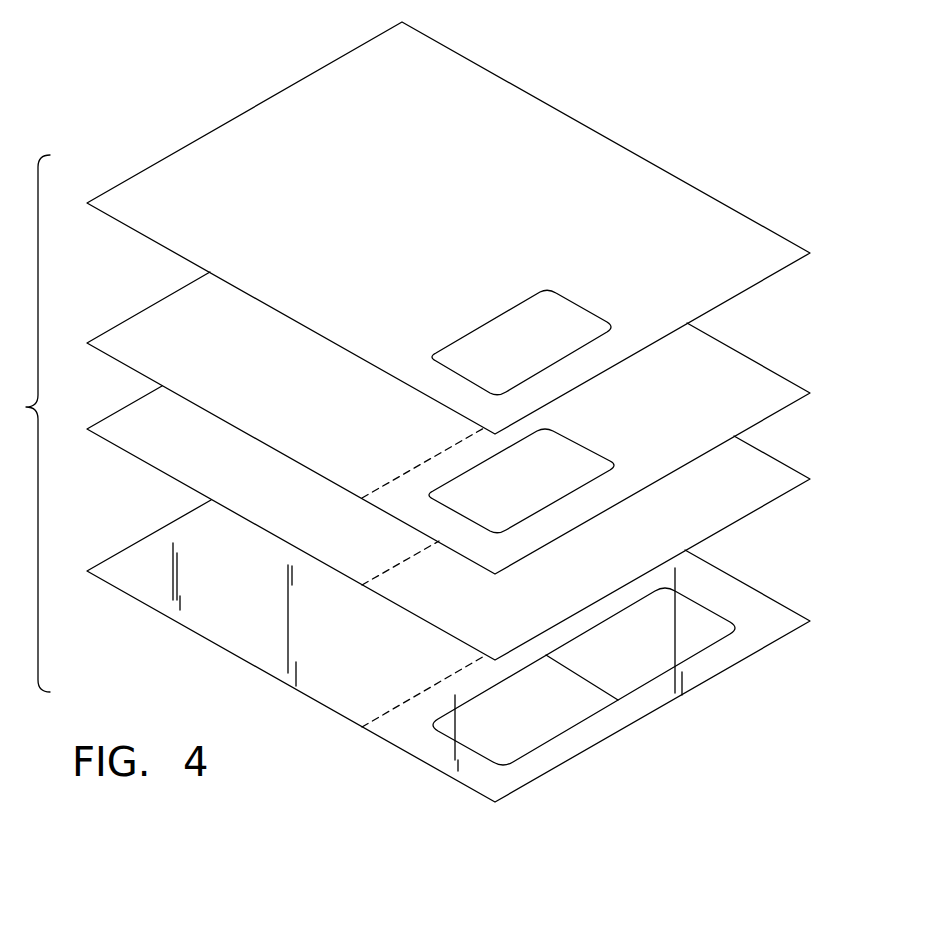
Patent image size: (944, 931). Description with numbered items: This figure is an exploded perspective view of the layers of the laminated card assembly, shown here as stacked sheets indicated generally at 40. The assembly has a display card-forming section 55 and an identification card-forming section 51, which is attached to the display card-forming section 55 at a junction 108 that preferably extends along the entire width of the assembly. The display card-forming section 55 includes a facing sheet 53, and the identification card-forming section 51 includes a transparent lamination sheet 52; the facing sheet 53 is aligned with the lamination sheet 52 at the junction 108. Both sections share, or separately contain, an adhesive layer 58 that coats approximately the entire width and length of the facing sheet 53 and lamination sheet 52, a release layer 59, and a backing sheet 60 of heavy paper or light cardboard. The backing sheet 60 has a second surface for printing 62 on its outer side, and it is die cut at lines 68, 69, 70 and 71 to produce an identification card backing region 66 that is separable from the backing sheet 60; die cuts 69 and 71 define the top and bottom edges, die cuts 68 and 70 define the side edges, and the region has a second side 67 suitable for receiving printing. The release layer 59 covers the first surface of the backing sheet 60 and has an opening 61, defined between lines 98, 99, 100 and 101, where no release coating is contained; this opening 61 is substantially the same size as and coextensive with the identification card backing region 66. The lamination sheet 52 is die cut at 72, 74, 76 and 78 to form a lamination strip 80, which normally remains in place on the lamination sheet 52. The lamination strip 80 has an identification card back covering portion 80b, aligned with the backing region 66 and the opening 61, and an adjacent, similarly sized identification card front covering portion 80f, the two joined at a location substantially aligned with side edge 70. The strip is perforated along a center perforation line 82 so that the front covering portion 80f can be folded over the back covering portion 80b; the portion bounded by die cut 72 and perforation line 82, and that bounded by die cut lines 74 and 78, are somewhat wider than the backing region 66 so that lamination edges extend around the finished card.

The stacked layer assembly 40 is at (238, 71).
The identification card-forming section 51 is at (389, 765).
The transparent lamination sheet 52 is at (763, 608).
The facing sheet 53 is at (224, 638).
The display card-forming section 55 is at (128, 617).
The adhesive layer 58 is at (785, 476).
The release layer 59 is at (752, 375).
The backing sheet 60 is at (617, 178).
The opening 61 is at (455, 482).
The second surface for printing 62 is at (525, 133).
The identification card backing region 66 is at (540, 300).
The second side 67 is at (605, 331).
The die cut 68 is at (450, 358).
The die cut 69 is at (485, 325).
The die cut 70 is at (578, 312).
The die cut 71 is at (528, 379).
The die cut 72 is at (449, 741).
The die cut line 74 is at (477, 693).
The die cut 76 is at (717, 605).
The die cut line 78 is at (650, 686).
The lamination strip 80 is at (699, 576).
The identification card back covering portion 80b is at (507, 748).
The identification card front covering portion 80f is at (690, 650).
The perforation line 82 is at (591, 683).
The line 98 is at (583, 487).
The line 99 is at (478, 464).
The line 100 is at (482, 523).
The line 101 is at (557, 438).
The junction 108 is at (402, 703).